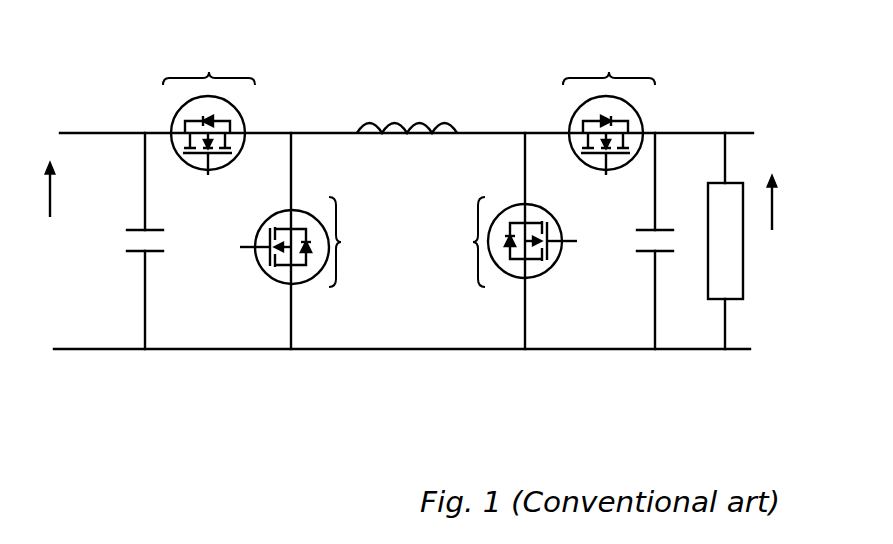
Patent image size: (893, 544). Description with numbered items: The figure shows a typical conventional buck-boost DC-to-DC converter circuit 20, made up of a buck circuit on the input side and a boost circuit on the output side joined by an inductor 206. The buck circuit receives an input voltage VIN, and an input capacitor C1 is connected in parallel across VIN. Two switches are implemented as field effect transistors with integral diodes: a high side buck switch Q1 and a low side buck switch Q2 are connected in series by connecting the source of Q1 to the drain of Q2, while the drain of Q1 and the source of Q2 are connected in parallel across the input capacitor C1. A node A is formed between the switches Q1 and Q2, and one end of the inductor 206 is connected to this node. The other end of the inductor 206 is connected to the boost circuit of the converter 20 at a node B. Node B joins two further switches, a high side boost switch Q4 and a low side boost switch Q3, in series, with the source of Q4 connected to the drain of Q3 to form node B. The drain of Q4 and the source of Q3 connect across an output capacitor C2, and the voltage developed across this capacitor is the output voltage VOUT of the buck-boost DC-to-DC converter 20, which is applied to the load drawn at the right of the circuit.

The buck-boost DC-to-DC converter circuit 20 is at (419, 244).
The inductor 206 is at (408, 134).
The high side buck switch Q1 is at (208, 149).
The low side buck switch Q2 is at (274, 247).
The low side boost switch Q3 is at (539, 241).
The high side boost switch Q4 is at (606, 149).
The input capacitor C1 is at (159, 238).
The output capacitor C2 is at (636, 238).
The input voltage VIN is at (48, 210).
The output voltage VOUT is at (782, 225).